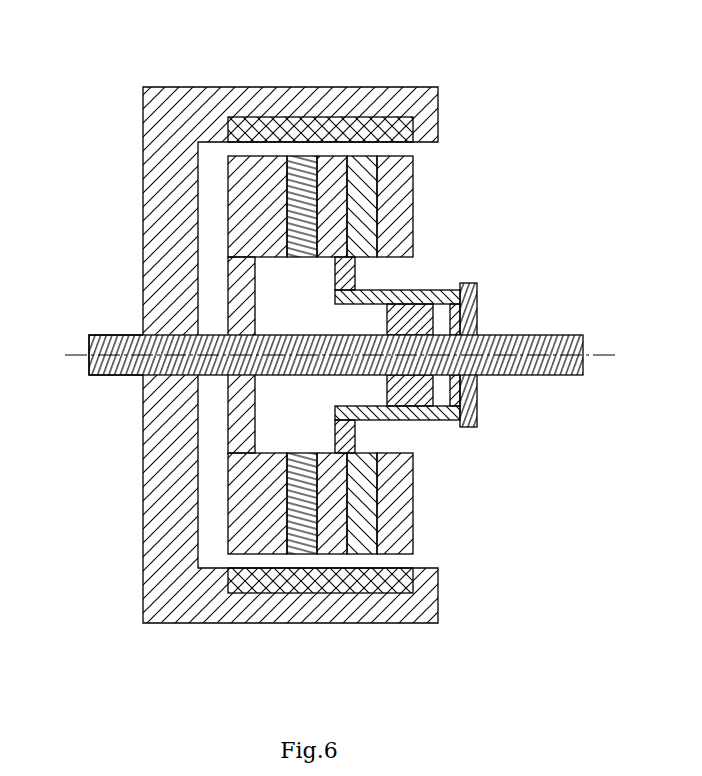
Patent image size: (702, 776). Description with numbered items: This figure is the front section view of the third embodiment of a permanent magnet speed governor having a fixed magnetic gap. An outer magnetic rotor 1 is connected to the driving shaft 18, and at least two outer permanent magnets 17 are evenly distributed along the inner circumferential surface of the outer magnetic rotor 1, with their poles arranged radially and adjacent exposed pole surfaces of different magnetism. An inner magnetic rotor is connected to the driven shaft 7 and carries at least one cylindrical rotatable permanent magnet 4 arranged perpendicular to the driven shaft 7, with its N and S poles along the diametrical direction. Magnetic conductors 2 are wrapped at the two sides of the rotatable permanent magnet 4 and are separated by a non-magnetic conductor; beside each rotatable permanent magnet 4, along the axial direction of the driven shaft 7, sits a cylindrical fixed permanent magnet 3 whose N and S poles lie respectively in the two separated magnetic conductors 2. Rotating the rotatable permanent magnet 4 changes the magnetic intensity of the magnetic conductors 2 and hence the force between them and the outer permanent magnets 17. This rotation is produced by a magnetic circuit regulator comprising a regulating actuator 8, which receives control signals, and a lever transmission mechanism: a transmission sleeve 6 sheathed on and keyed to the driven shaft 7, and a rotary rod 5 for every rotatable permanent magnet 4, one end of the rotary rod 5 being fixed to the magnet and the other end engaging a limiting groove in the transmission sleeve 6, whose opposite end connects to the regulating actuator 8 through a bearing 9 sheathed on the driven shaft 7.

The outer magnetic rotor 1 is at (155, 283).
The magnetic conductor 2 is at (398, 188).
The fixed permanent magnet 3 is at (307, 528).
The rotatable permanent magnet 4 is at (368, 522).
The rotary rod 5 is at (348, 430).
The transmission sleeve 6 is at (428, 288).
The driven shaft 7 is at (533, 335).
The regulating actuator 8 is at (478, 402).
The bearing 9 is at (458, 290).
The outer permanent magnet 17 is at (390, 127).
The driving shaft 18 is at (102, 335).